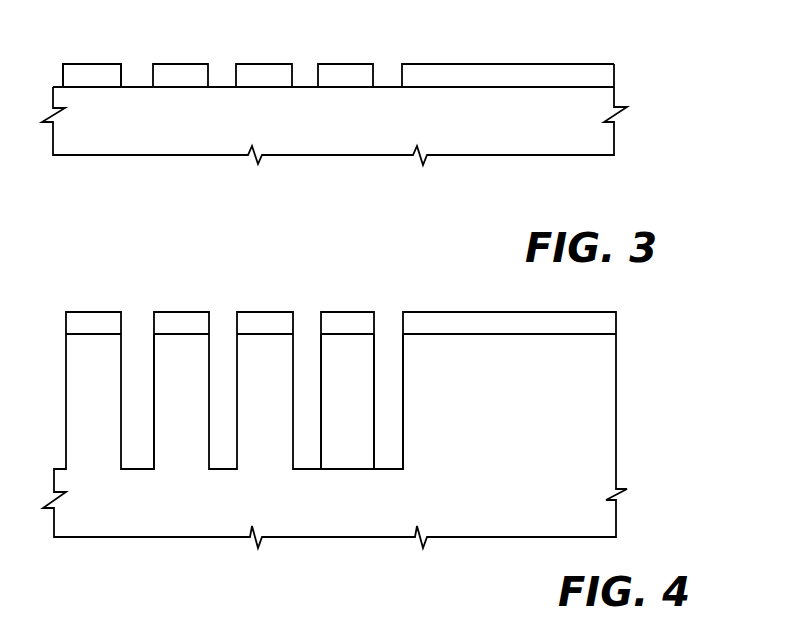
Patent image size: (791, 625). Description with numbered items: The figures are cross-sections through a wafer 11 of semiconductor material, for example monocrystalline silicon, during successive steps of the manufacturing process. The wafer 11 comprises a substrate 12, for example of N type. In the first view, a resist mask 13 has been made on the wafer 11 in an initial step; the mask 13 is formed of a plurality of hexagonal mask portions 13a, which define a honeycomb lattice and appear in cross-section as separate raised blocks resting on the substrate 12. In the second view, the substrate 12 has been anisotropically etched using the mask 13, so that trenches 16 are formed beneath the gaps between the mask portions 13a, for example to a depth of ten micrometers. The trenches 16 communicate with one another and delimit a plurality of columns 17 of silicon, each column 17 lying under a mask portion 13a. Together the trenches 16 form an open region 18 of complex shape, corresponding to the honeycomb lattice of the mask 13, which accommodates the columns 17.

In FIG. 3, the wafer 11 is at (646, 112).
In FIG. 4, the wafer 11 is at (662, 388).
In FIG. 3, the substrate 12 is at (587, 145).
In FIG. 4, the substrate 12 is at (605, 462).
In FIG. 3, the resist mask 13 is at (624, 72).
In FIG. 4, the resist mask 13 is at (624, 328).
In FIG. 3, the mask portions 13a is at (107, 72).
In FIG. 4, the mask portions 13a is at (87, 322).
In FIG. 4, the trenches 16 is at (148, 370).
In FIG. 4, the columns 17 is at (332, 380).
In FIG. 4, the open region 18 is at (388, 330).